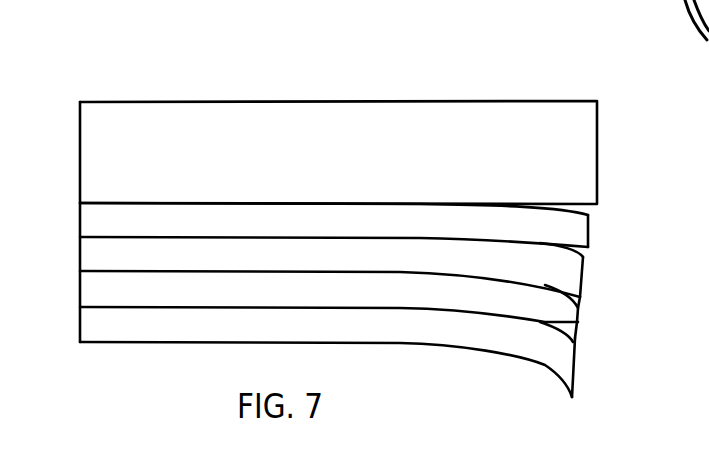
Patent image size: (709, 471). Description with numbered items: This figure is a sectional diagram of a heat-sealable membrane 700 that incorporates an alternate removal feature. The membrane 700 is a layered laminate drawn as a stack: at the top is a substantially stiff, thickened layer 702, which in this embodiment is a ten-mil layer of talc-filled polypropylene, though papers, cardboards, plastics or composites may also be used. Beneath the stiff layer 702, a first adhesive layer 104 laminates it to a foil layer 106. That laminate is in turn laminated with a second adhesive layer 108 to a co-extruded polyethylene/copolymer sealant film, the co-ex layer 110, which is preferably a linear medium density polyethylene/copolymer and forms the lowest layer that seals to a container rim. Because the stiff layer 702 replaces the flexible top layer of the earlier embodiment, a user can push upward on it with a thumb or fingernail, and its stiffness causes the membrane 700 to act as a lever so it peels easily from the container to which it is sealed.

The membrane 700 is at (333, 73).
The stiff layer 702 is at (598, 168).
The first adhesive layer 104 is at (588, 247).
The foil layer 106 is at (582, 282).
The second adhesive layer 108 is at (578, 322).
The co-ex layer 110 is at (573, 380).